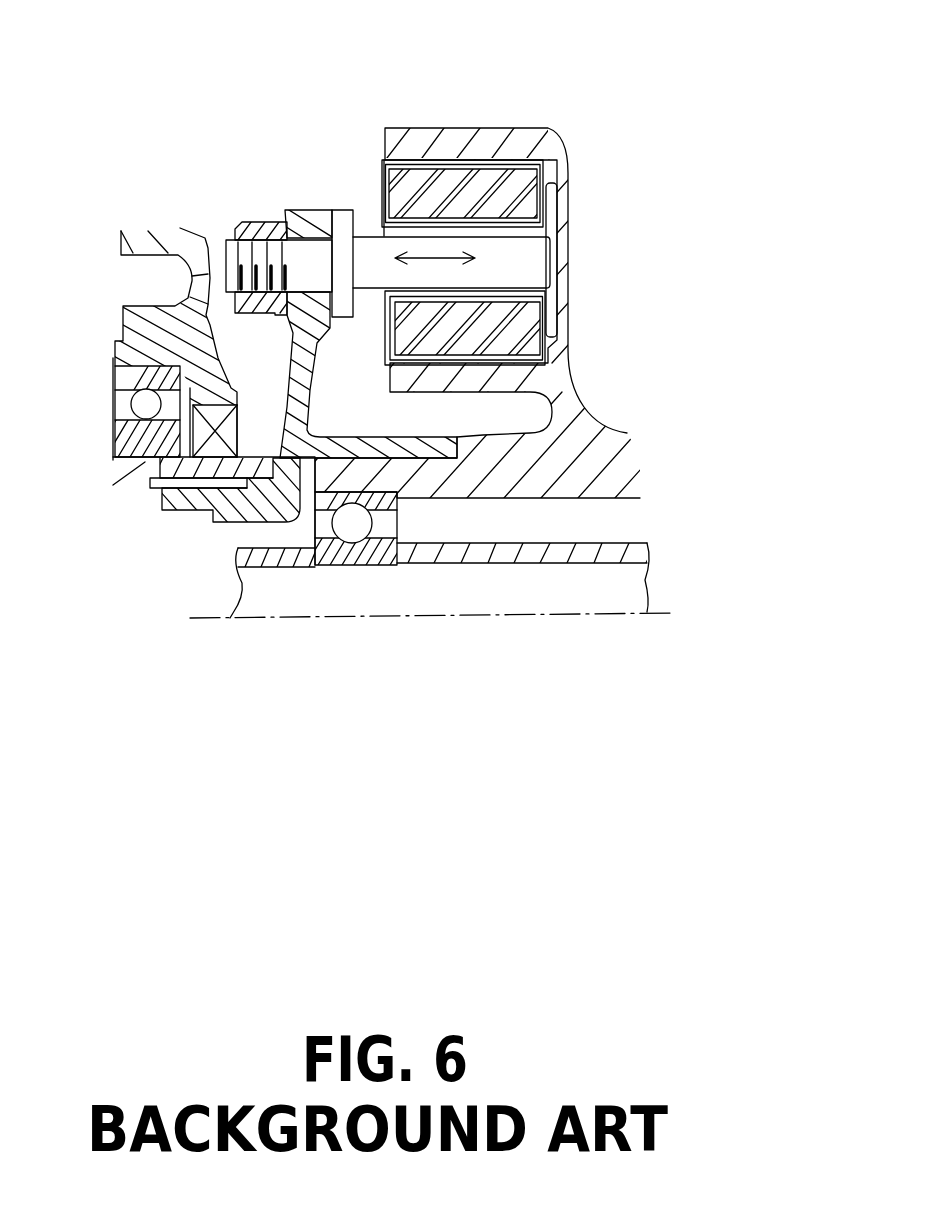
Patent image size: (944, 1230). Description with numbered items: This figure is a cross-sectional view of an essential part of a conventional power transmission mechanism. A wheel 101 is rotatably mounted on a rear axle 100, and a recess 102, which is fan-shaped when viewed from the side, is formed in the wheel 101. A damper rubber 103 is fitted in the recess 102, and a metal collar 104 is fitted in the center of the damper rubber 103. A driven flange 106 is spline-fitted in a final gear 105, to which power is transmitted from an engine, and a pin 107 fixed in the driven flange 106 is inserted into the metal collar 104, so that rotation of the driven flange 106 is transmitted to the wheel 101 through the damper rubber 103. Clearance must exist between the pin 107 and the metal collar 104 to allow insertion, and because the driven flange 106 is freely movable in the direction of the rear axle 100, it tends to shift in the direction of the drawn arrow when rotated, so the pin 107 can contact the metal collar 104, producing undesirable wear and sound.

The rear axle 100 is at (550, 565).
The wheel 101 is at (627, 433).
The recess 102 is at (572, 300).
The damper rubber 103 is at (515, 160).
The metal collar 104 is at (572, 183).
The final gear 105 is at (150, 465).
The driven flange 106 is at (297, 208).
The pin 107 is at (365, 232).